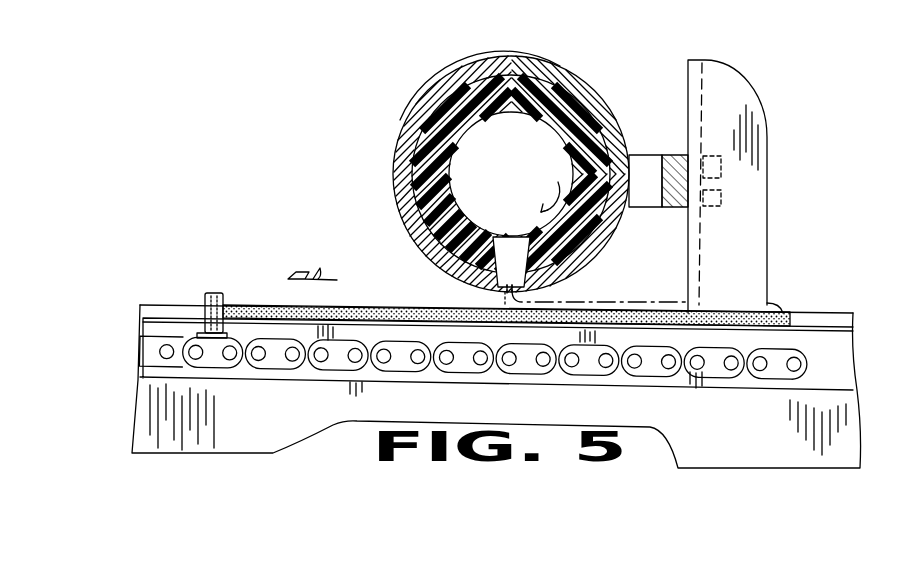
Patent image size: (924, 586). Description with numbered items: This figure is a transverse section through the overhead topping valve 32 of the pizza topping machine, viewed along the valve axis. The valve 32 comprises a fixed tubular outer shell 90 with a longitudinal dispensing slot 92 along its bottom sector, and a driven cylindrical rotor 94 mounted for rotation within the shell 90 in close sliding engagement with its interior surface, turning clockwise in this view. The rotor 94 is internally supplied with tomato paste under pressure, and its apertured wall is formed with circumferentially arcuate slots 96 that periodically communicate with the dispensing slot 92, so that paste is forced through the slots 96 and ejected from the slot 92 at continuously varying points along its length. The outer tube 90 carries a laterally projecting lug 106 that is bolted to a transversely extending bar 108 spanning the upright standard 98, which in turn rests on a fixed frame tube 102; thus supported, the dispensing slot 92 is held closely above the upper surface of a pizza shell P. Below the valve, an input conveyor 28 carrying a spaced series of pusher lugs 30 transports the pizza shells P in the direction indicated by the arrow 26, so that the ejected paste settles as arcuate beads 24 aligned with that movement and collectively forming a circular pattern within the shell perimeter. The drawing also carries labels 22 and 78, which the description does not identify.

The conveyor bed / rail 22 is at (752, 331).
The arcuate beads 24 is at (590, 300).
The arrow 26 is at (320, 271).
The input conveyor 28 is at (812, 364).
The pusher lugs 30 is at (210, 293).
The topping valve 32 is at (462, 167).
The chain link 78 is at (708, 378).
The tubular outer shell 90 is at (510, 60).
The longitudinal slot 92 is at (506, 292).
The cylindrical rotor 94 is at (425, 174).
The circumferentially arcuate slots 96 is at (507, 247).
The upright standard 98 is at (763, 177).
The frame tube 102 is at (850, 417).
The laterally projecting lug 106 is at (647, 158).
The transversely extending bar 108 is at (676, 207).
The pizza shells P is at (352, 308).